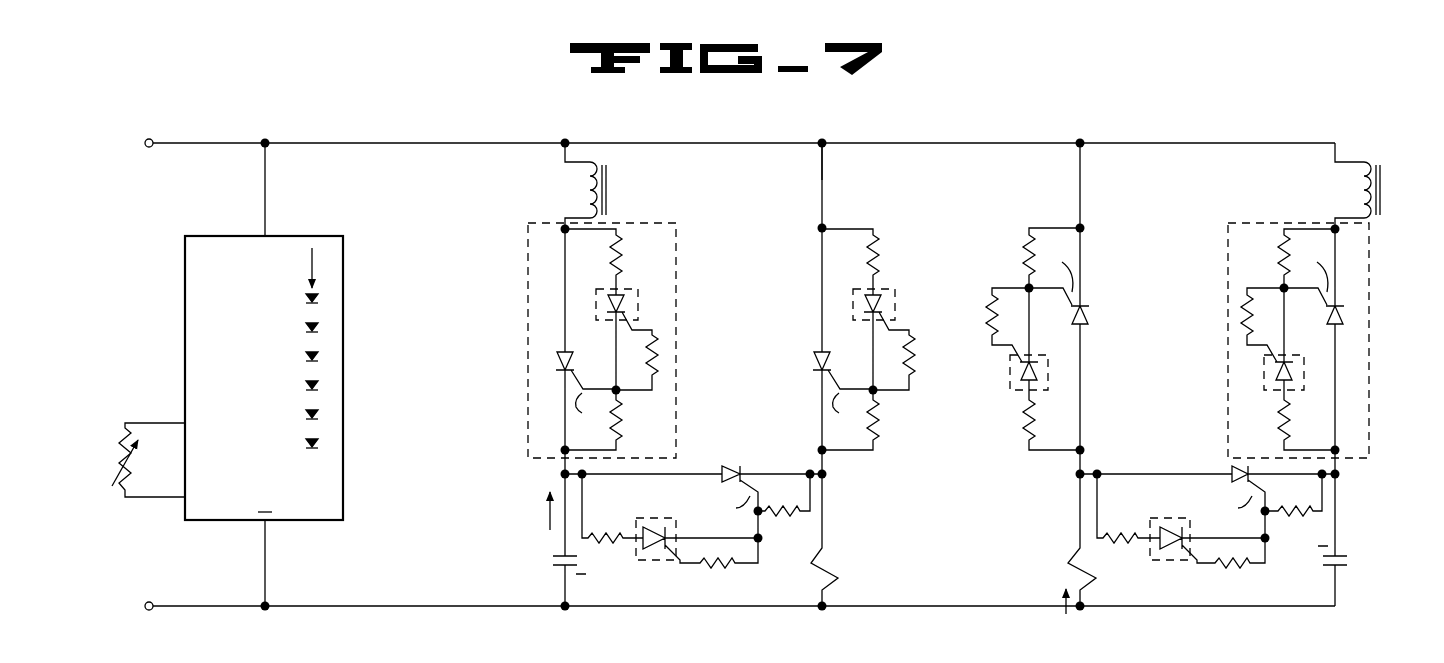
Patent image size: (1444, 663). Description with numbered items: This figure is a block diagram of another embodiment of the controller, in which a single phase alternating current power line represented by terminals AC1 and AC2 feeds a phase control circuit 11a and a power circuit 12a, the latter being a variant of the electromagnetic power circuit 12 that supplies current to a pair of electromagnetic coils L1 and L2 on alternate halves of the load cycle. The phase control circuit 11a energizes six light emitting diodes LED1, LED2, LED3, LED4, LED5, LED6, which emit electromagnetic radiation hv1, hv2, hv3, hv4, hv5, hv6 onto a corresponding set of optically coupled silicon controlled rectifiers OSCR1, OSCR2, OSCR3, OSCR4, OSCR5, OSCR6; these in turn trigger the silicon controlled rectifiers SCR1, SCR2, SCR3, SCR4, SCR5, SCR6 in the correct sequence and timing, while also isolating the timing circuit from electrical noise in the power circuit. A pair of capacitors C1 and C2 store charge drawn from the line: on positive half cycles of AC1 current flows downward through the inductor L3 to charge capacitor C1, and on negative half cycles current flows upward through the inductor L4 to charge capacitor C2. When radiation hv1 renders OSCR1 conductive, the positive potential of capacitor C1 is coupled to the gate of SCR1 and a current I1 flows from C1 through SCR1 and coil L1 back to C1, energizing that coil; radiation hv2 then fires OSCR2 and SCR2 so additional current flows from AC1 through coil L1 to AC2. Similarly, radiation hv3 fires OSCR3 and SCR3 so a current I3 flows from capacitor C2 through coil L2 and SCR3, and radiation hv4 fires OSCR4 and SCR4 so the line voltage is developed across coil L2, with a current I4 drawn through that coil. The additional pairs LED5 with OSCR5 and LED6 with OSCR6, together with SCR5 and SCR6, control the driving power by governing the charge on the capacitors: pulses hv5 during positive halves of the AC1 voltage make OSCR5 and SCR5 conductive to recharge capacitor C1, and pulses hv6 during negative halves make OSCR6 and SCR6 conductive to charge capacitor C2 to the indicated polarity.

The single phase alternating current power line terminal AC1 is at (168, 145).
The single phase alternating current power line terminal AC2 is at (240, 607).
The phase control circuit 11a is at (340, 236).
The light emitting diode LED1 is at (280, 300).
The light emitting diode LED2 is at (280, 329).
The light emitting diode LED3 is at (280, 358).
The light emitting diode LED4 is at (280, 387).
The light emitting diode LED5 is at (280, 416).
The light emitting diode LED6 is at (280, 445).
The electromagnetic radiation hv1 is at (322, 300).
The electromagnetic radiation hv2 is at (922, 270).
The electromagnetic radiation hv3 is at (1160, 566).
The electromagnetic radiation hv4 is at (1010, 395).
The radiation pulses hv5 is at (688, 272).
The radiation pulses hv6 is at (322, 445).
The electromagnetic power circuit 12 is at (812, 180).
The power circuit 12a is at (513, 478).
The current I1 is at (547, 516).
The current I3 is at (1350, 597).
The current I4 is at (1062, 612).
The electromagnetic coil L1 is at (838, 578).
The electromagnetic coil L2 is at (1070, 559).
The inductor L3 is at (578, 188).
The inductor L4 is at (1352, 188).
The capacitor C1 is at (552, 557).
The capacitor C2 is at (1324, 558).
The silicon controlled rectifier SCR1 is at (732, 466).
The silicon controlled rectifier SCR2 is at (813, 361).
The silicon controlled rectifier SCR3 is at (1230, 471).
The silicon controlled rectifier SCR4 is at (1089, 315).
The silicon controlled rectifier SCR5 is at (556, 361).
The silicon controlled rectifier SCR6 is at (1345, 317).
The optically coupled silicon controlled rectifier OSCR1 is at (678, 517).
The optically coupled silicon controlled rectifier OSCR2 is at (899, 305).
The optically coupled silicon controlled rectifier OSCR3 is at (1185, 517).
The optically coupled silicon controlled rectifier OSCR4 is at (1009, 378).
The optically coupled silicon controlled rectifier OSCR5 is at (642, 306).
The optically coupled silicon controlled rectifier OSCR6 is at (1262, 383).